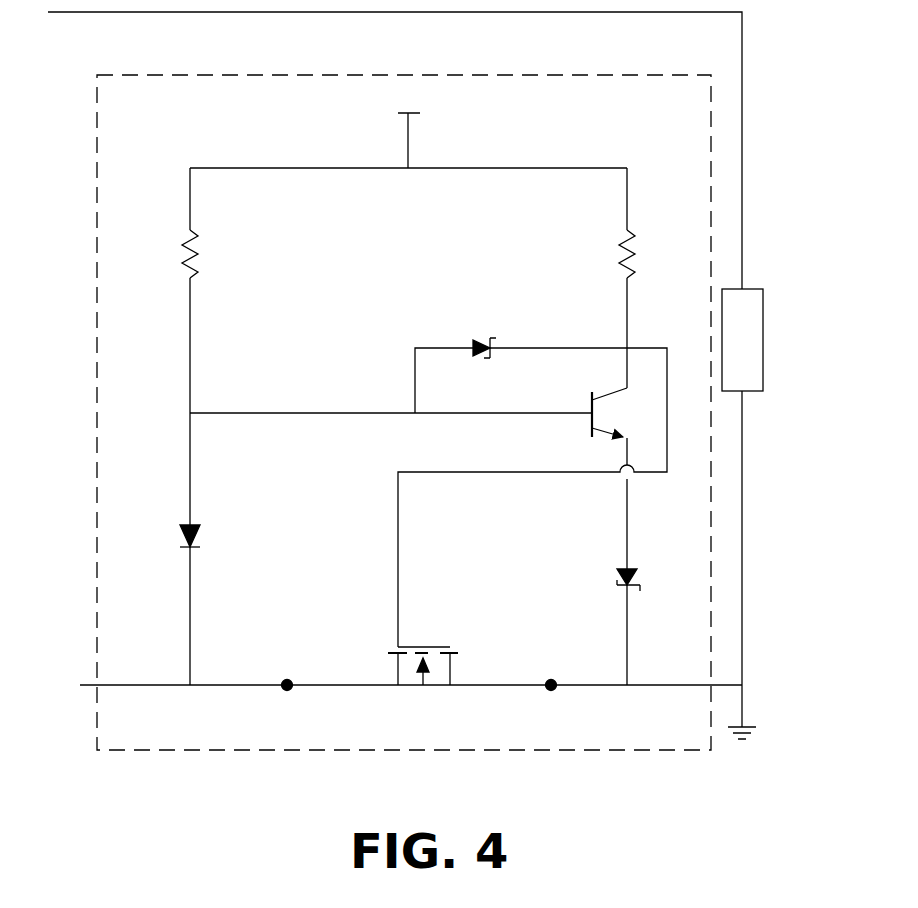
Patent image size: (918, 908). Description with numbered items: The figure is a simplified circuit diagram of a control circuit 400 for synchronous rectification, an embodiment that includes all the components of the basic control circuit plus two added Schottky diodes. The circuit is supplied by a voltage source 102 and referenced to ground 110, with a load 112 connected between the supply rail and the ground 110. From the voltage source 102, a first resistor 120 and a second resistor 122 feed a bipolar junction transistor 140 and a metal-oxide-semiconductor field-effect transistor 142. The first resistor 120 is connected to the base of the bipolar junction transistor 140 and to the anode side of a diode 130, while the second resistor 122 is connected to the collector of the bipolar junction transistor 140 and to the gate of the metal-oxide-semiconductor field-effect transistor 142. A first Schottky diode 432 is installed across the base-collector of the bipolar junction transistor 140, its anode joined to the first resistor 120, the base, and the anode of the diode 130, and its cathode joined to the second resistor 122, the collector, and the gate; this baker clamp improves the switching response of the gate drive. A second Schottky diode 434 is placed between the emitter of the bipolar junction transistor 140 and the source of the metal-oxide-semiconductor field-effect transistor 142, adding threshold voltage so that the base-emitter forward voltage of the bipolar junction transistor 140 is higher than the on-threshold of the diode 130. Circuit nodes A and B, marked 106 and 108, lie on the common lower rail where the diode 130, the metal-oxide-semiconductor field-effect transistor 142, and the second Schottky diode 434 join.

The control circuit 400 is at (229, 64).
The voltage source 102 is at (376, 110).
The first resistor 120 is at (187, 262).
The second resistor 122 is at (632, 262).
The first Schottky diode 432 is at (487, 338).
The bipolar junction transistor 140 is at (577, 437).
The diode 130 is at (185, 545).
The second Schottky diode 434 is at (639, 578).
The metal-oxide-semiconductor field-effect transistor 142 is at (431, 700).
The node A 106 is at (284, 698).
The node B 108 is at (553, 700).
The load 112 is at (768, 286).
The ground 110 is at (753, 718).